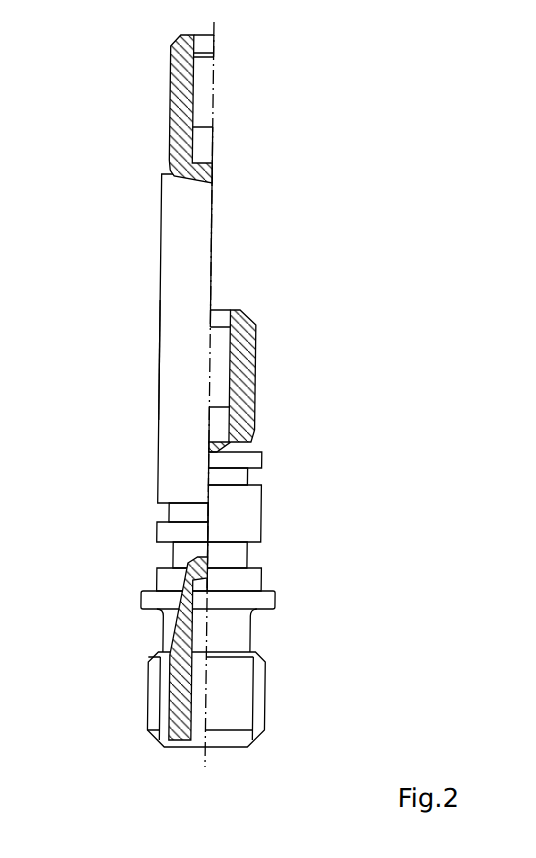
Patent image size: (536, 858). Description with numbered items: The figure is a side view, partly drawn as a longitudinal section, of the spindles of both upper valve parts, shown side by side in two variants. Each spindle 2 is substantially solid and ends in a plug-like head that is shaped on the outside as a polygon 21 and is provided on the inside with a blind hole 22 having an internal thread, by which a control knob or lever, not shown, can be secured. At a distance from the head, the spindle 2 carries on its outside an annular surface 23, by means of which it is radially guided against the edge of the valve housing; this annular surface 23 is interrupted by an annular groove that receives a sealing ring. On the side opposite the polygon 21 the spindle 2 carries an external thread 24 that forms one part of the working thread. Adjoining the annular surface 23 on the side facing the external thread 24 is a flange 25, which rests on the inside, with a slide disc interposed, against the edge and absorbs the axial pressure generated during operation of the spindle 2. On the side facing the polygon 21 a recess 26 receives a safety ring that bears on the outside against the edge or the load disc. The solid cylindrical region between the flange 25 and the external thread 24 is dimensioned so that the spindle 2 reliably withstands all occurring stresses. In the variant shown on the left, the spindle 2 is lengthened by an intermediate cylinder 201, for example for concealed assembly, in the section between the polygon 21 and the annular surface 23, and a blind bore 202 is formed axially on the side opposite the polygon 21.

The spindle 2 is at (183, 258).
The intermediate cylinder 201 is at (184, 362).
The blind bore 202 is at (203, 634).
The polygon 21 is at (178, 107).
The blind hole 22 is at (208, 90).
The annular surface 23 is at (172, 578).
The external thread 24 is at (169, 717).
The flange 25 is at (167, 602).
The recess 26 is at (171, 515).